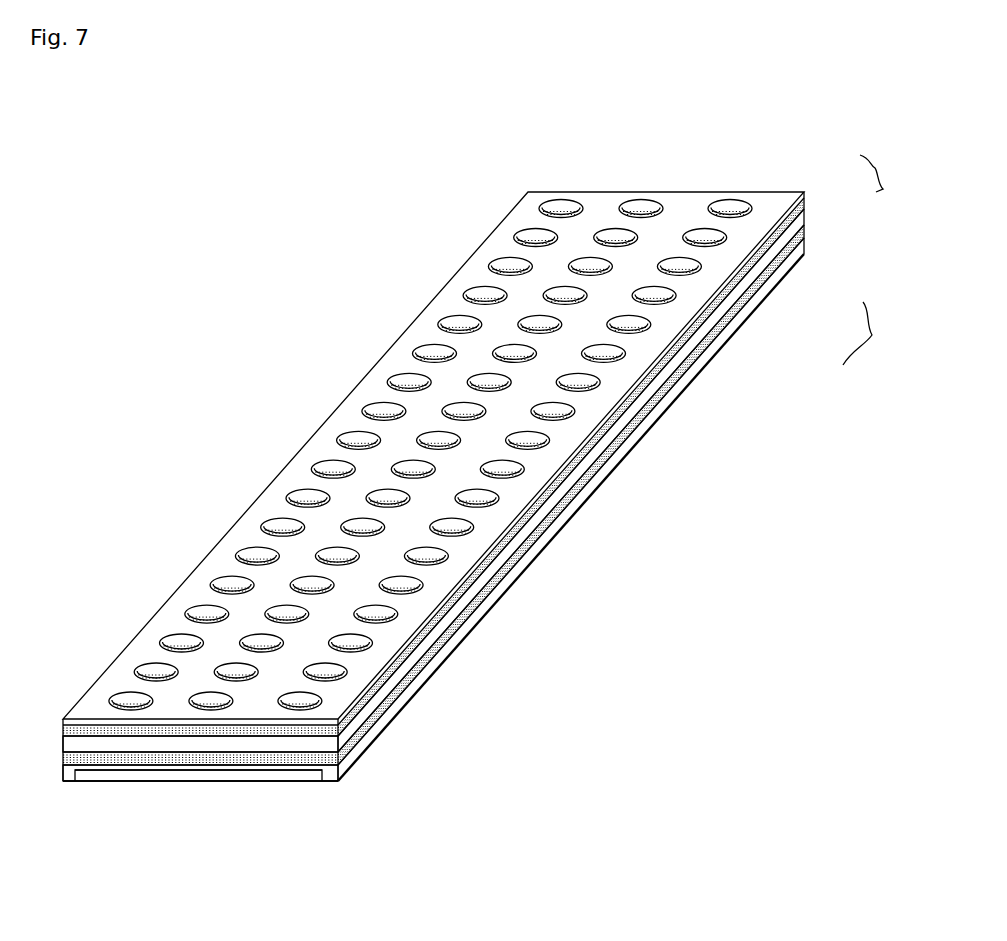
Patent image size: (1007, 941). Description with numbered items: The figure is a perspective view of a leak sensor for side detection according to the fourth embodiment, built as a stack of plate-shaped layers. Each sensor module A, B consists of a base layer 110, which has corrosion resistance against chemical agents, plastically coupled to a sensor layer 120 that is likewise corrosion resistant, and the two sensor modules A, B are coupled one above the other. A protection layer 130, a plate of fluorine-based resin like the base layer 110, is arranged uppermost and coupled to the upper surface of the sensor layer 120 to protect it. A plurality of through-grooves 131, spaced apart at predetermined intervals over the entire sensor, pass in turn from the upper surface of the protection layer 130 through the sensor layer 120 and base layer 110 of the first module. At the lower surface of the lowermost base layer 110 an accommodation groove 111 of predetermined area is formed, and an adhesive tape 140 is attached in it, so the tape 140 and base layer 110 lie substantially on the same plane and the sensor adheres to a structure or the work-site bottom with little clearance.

The base layer 110 is at (805, 218).
The accommodation groove 111 is at (313, 777).
The sensor layer 120 is at (805, 199).
The protection layer 130 is at (687, 208).
The through-grooves 131 is at (561, 200).
The adhesive tape 140 is at (182, 777).
The sensor module A is at (877, 172).
The sensor module B is at (862, 333).